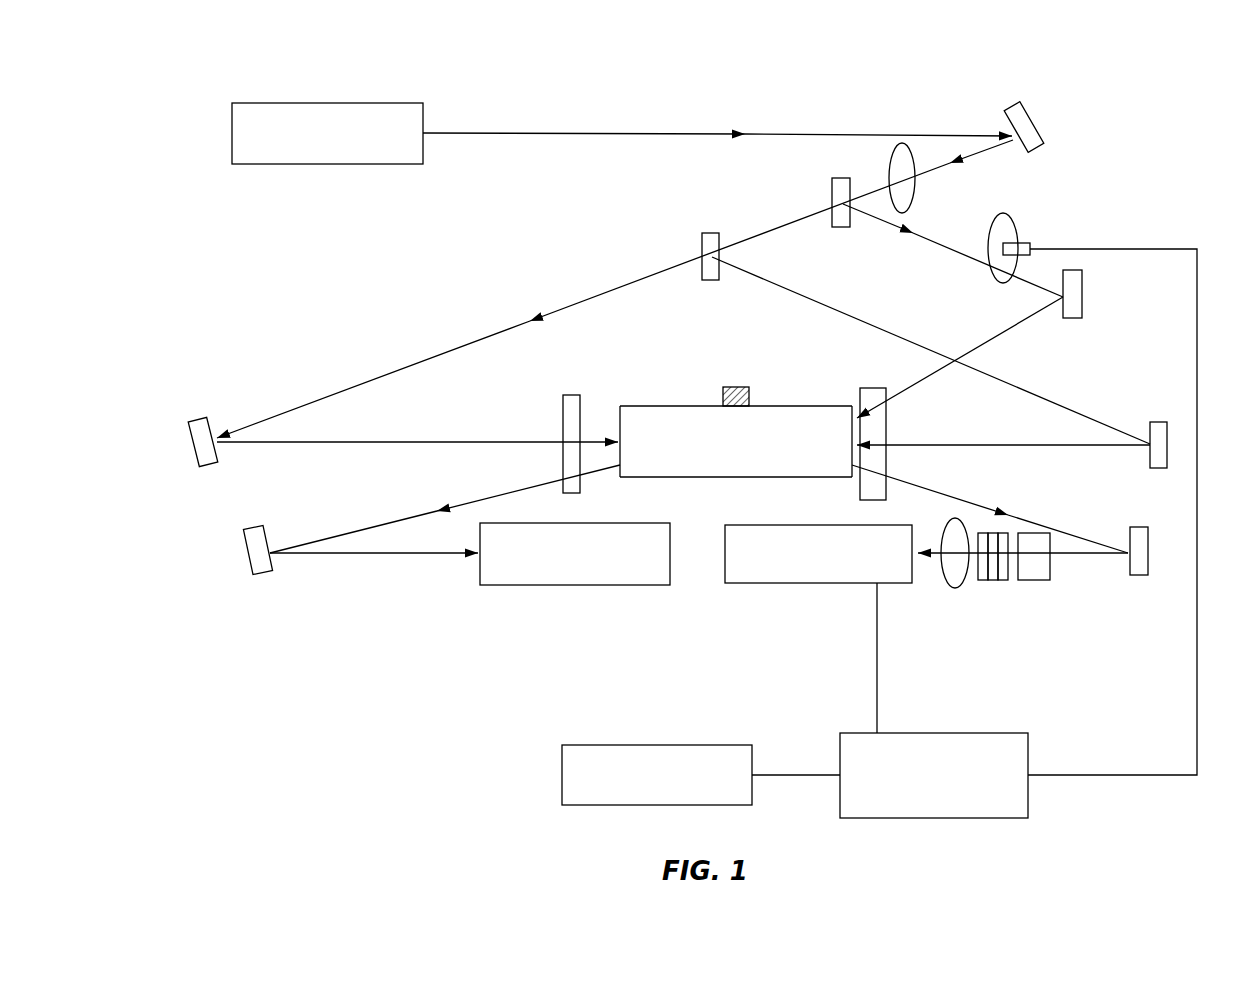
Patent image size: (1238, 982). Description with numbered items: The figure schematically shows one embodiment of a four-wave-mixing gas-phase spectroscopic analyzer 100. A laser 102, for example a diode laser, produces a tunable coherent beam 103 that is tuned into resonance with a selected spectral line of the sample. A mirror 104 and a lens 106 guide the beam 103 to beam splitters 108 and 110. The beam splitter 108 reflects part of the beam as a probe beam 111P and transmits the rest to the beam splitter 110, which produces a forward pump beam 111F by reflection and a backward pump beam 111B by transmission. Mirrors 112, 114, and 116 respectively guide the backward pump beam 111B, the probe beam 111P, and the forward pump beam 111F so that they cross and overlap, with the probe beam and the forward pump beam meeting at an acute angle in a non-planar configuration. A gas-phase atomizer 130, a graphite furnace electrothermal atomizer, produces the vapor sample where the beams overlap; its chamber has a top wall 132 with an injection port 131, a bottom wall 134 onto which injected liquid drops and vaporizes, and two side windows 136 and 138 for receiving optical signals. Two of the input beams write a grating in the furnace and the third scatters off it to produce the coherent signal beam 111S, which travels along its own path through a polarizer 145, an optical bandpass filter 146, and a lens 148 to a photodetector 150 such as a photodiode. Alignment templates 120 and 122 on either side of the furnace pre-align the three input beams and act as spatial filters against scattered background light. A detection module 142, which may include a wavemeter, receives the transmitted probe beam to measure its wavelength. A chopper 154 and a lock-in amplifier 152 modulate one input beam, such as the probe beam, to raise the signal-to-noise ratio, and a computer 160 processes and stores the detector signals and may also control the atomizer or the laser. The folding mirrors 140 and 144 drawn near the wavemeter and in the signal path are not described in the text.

The four-wave-mixing gas-phase spectroscopic analyzer 100 is at (748, 82).
The laser 102 is at (327, 162).
The tunable coherent beam 103 is at (717, 161).
The mirror 104 is at (998, 105).
The lens 106 is at (904, 182).
The beam splitter 108 is at (810, 187).
The beam splitter 110 is at (893, 323).
The probe beam 111P is at (936, 250).
The backward pump beam 111B is at (615, 289).
The forward pump beam 111F is at (1003, 454).
The signal beam 111S is at (999, 509).
The mirror 112 is at (222, 419).
The mirror 114 is at (996, 344).
The mirror 116 is at (1186, 423).
The alignment template 120 is at (417, 435).
The alignment template 122 is at (862, 413).
The gas-phase atomizer 130 is at (736, 416).
The injection port 131 is at (718, 374).
The top wall 132 is at (540, 455).
The bottom wall 134 is at (736, 504).
The side window 136 is at (585, 415).
The side window 138 is at (812, 462).
The mirror 140 is at (360, 576).
The detection module 142 is at (575, 580).
The mirror 144 is at (1064, 532).
The polarizer 145 is at (1067, 572).
The optical bandpass filter 146 is at (1015, 572).
The lens 148 is at (1042, 586).
The photodetector 150 is at (818, 629).
The lock-in amplifier 152 is at (1018, 533).
The chopper 154 is at (1031, 262).
The computer 160 is at (701, 753).